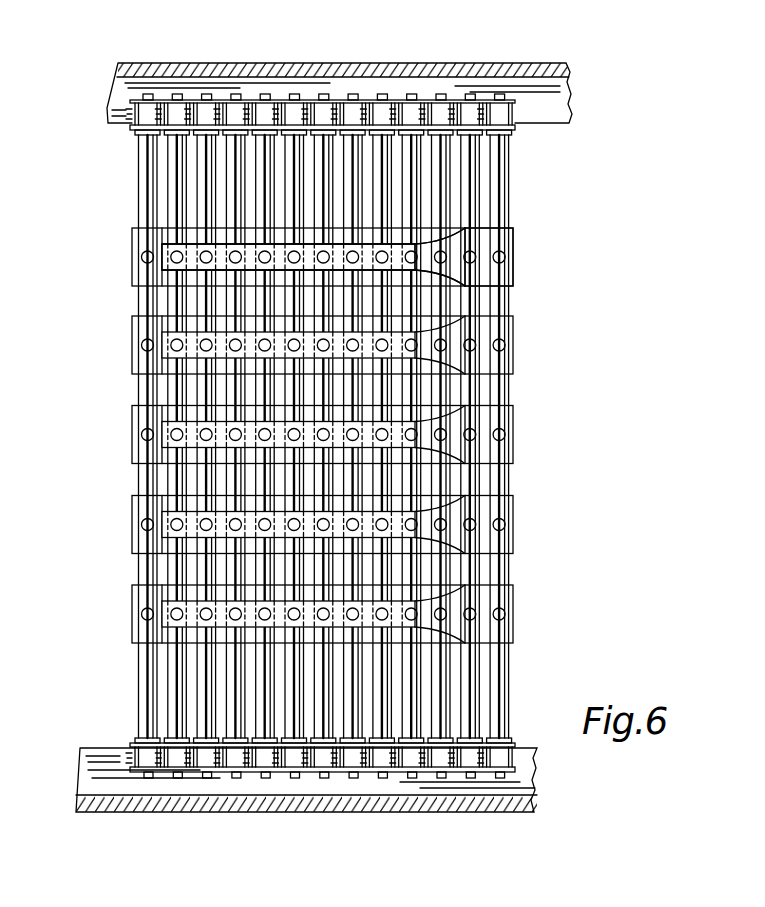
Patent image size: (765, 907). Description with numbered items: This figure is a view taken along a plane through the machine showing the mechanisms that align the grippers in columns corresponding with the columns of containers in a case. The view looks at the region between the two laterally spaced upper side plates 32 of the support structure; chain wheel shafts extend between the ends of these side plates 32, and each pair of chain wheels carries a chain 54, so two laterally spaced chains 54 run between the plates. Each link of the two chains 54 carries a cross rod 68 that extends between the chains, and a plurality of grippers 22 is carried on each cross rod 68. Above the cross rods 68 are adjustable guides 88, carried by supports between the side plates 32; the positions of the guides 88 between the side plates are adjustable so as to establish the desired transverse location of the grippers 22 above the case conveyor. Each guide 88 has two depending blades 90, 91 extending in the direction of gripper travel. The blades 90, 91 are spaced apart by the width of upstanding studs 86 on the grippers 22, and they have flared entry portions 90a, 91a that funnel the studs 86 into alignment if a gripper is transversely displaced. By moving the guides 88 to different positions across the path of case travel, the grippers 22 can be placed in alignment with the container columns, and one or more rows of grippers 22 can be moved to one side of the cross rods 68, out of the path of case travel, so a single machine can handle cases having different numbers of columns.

The upper side plates 32 is at (430, 63).
The chain 54 is at (488, 103).
The cross rod 68 is at (500, 185).
The gripper 22 is at (527, 243).
The upstanding stud 86 is at (515, 262).
The adjustable guide 88 is at (178, 246).
The depending blade 90 is at (152, 247).
The depending blade 91 is at (148, 270).
The flared entry portion 90a is at (488, 226).
The flared entry portion 91a is at (510, 284).